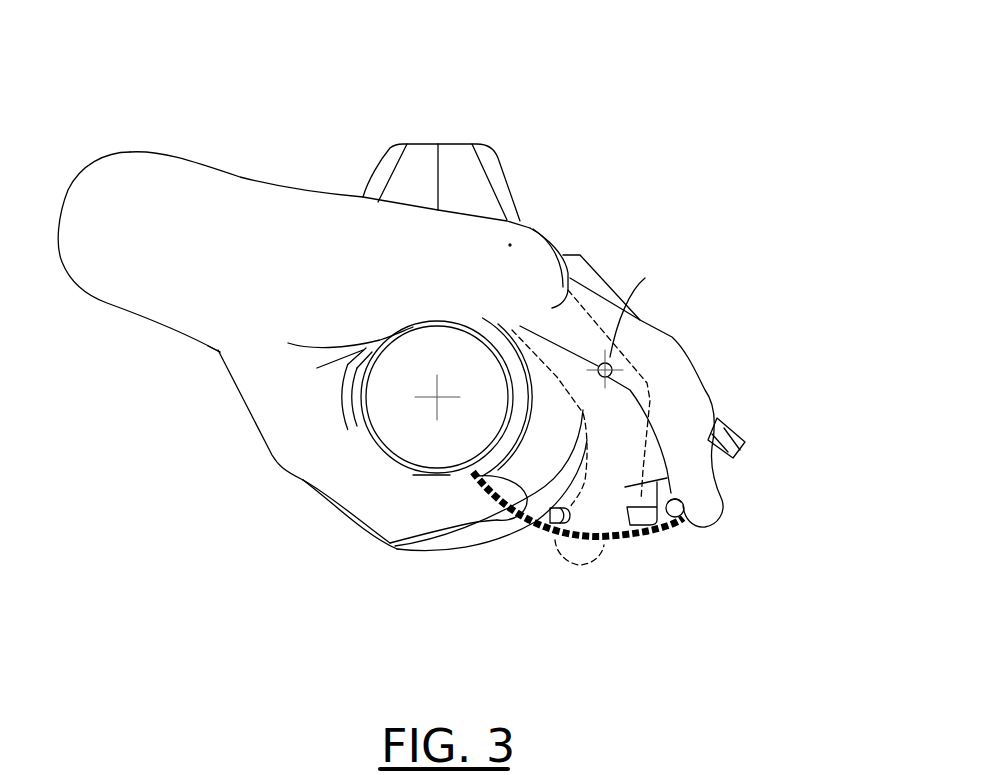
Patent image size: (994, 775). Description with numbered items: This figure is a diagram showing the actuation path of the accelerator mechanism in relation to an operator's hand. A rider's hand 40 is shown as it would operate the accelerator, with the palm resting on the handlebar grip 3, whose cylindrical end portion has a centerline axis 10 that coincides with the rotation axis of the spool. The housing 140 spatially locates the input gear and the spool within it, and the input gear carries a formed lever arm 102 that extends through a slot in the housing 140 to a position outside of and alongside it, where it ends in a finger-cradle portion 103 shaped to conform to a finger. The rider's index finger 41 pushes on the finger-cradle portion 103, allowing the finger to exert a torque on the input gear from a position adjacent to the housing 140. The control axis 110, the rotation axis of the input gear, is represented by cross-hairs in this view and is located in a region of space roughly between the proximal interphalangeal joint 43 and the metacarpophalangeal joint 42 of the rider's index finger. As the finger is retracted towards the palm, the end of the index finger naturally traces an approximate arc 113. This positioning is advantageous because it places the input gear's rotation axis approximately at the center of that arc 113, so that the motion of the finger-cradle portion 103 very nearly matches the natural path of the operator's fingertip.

The handlebar grip 3 is at (405, 370).
The centerline axis 10 is at (437, 397).
The rider's hand 40 is at (115, 195).
The finger 41 is at (700, 503).
The metacarpophalangeal joint 42 is at (525, 272).
The proximal interphalangeal joint 43 is at (620, 403).
The lever arm 102 is at (743, 442).
The finger-cradle portion 103 is at (683, 500).
The control axis 110 is at (645, 278).
The arc 113 is at (553, 522).
The housing 140 is at (417, 173).